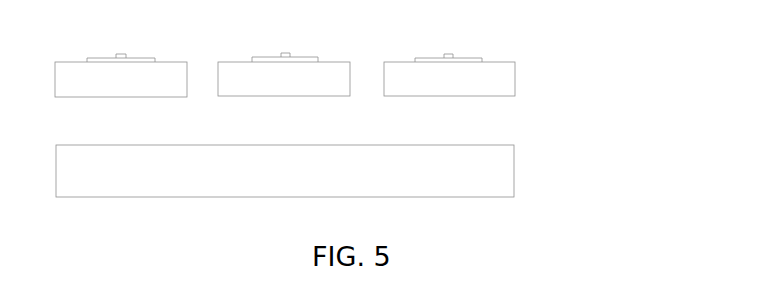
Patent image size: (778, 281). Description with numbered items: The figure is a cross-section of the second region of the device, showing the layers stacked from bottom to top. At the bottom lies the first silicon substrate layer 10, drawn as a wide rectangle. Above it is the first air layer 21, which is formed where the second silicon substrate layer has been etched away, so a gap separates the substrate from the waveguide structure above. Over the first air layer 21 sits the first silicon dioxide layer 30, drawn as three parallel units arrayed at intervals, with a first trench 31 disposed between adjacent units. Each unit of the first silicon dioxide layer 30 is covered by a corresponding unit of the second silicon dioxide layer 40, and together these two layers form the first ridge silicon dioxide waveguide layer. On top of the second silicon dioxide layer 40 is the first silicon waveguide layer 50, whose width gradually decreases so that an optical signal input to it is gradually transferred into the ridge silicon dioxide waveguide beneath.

The first silicon substrate layer 10 is at (502, 175).
The first air layer 21 is at (488, 123).
The first silicon dioxide layer 30 is at (490, 80).
The first trench 31 is at (202, 85).
The second silicon dioxide layer 40 is at (470, 60).
The first silicon waveguide layer 50 is at (450, 55).